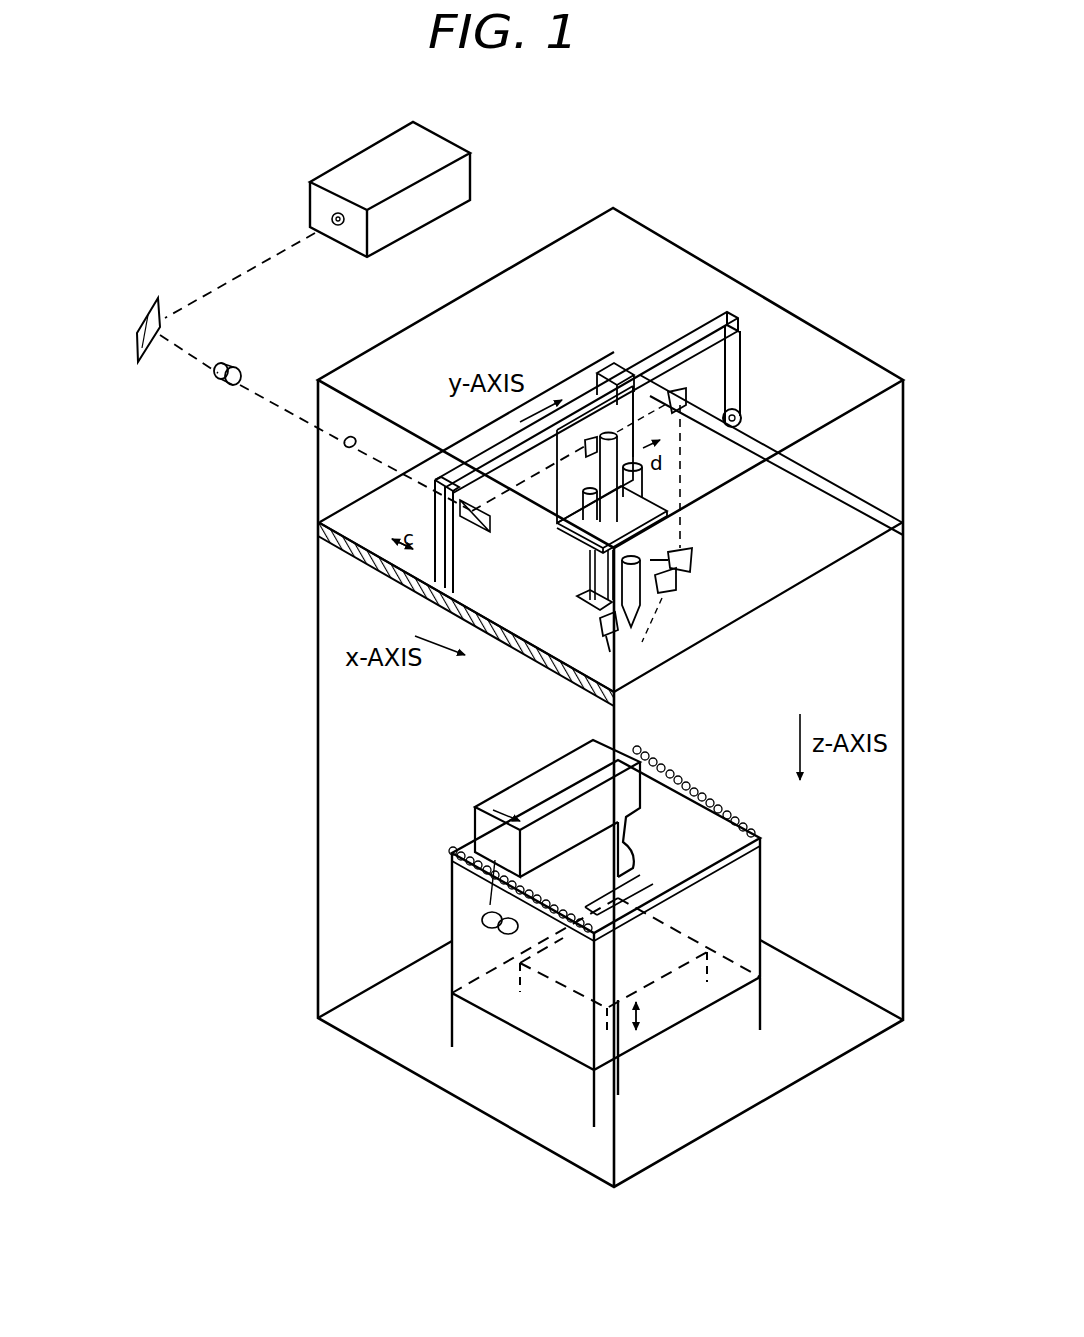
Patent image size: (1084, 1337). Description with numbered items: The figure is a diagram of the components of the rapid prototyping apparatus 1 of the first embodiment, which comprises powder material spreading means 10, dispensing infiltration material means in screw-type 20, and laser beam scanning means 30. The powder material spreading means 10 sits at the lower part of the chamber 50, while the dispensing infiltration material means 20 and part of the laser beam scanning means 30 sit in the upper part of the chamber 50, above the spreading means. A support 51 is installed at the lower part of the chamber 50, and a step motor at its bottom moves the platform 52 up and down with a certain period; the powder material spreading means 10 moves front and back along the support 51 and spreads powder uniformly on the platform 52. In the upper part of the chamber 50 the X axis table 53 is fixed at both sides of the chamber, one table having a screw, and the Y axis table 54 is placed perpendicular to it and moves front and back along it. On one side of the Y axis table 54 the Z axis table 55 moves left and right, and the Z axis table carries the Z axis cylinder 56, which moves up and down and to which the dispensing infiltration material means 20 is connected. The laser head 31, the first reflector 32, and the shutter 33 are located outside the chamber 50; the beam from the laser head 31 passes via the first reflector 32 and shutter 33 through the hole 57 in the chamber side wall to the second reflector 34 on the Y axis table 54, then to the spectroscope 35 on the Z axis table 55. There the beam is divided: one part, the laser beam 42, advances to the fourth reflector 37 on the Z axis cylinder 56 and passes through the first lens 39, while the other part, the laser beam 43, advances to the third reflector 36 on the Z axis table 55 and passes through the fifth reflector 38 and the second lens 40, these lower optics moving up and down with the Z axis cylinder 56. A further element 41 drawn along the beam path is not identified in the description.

The rapid prototyping apparatus 1 is at (632, 196).
The powder material spreading means 10 is at (516, 784).
The dispensing infiltration material means in screw-type 20 is at (690, 600).
The laser beam scanning means 30 is at (337, 150).
The laser head 31 is at (378, 148).
The first reflector 32 is at (137, 345).
The shutter 33 is at (222, 386).
The second reflector 34 is at (440, 580).
The spectroscope 35 is at (590, 434).
The third reflector 36 is at (676, 392).
The fourth reflector 37 is at (577, 608).
The fifth reflector 38 is at (690, 562).
The first lens 39 is at (598, 640).
The second lens 40 is at (690, 585).
The laser beam 41 is at (240, 272).
The laser beam 42 is at (608, 652).
The laser beam 43 is at (742, 424).
The chamber 50 is at (316, 912).
The support 51 is at (450, 925).
The platform 52 is at (563, 990).
The X axis table 53 is at (338, 530).
The Y axis table 54 is at (733, 322).
The Z axis table 55 is at (612, 362).
The Z axis cylinder 56 is at (690, 513).
The hole 57 is at (345, 447).